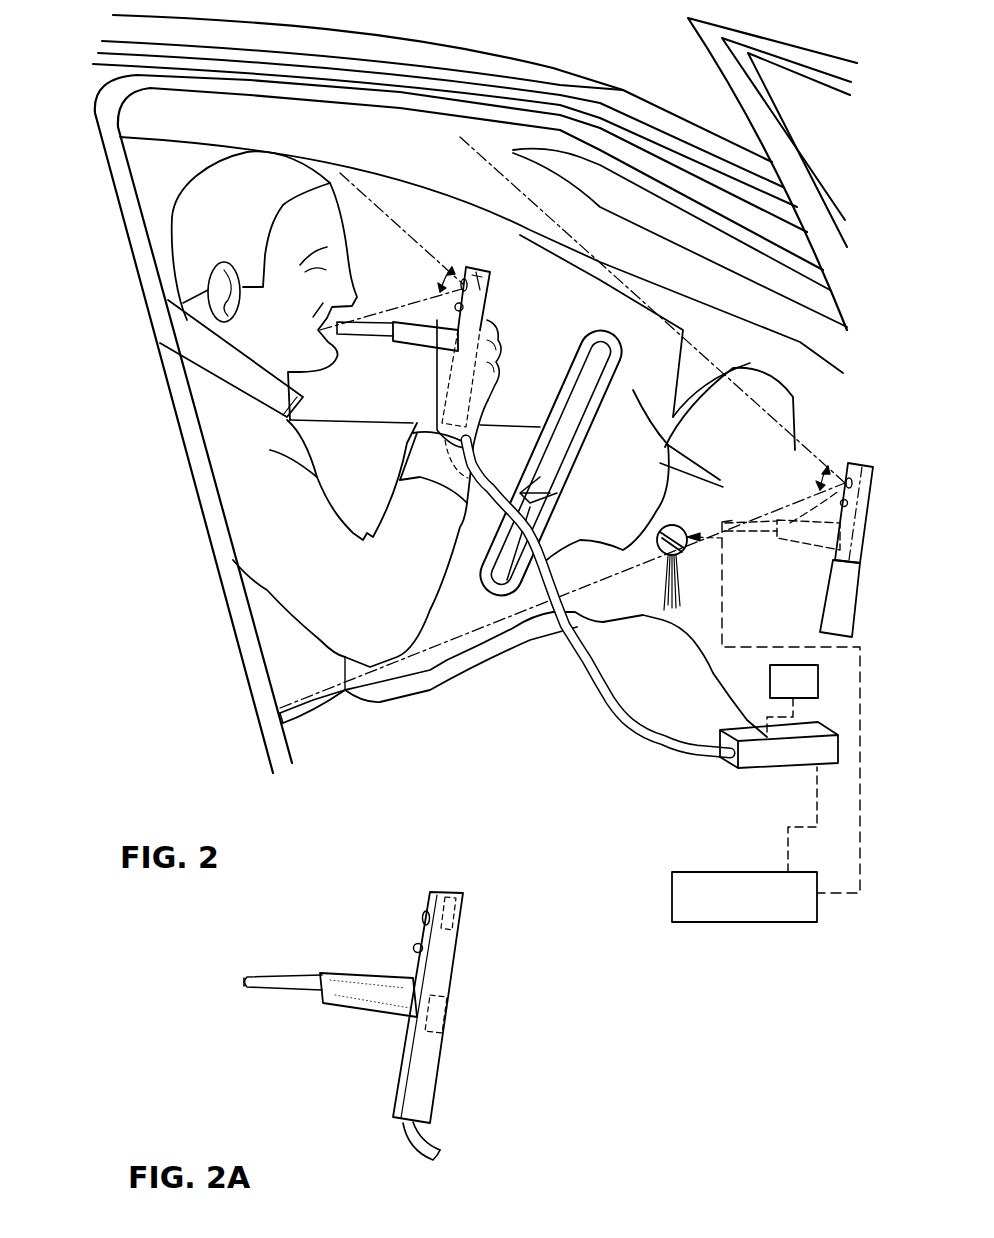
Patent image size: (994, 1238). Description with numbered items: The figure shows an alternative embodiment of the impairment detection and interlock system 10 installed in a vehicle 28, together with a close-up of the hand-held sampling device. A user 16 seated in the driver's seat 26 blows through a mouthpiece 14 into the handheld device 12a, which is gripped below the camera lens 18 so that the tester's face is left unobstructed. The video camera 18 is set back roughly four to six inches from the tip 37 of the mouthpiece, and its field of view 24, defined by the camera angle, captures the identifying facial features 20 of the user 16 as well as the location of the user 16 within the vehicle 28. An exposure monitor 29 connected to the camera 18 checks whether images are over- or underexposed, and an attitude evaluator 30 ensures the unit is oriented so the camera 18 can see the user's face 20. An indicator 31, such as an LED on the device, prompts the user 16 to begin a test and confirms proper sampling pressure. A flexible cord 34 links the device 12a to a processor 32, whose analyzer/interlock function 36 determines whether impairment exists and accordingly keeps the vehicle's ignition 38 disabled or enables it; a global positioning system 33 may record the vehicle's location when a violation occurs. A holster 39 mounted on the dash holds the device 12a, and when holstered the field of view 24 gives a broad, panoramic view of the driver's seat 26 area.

In FIG. 2, the impairment detection and interlock system 10 is at (350, 772).
In FIG. 2, the handheld device 12a is at (402, 347).
In FIG. 2A, the handheld device 12a is at (319, 1048).
In FIG. 2, the mouthpiece 14 is at (365, 320).
In FIG. 2A, the mouthpiece 14 is at (280, 975).
In FIG. 2, the user 16 is at (320, 462).
In FIG. 2, the video camera 18 is at (465, 280).
In FIG. 2A, the video camera 18 is at (425, 910).
In FIG. 2, the identifying facial features 20 is at (345, 262).
In FIG. 2, the field of view 24 is at (390, 212).
In FIG. 2, the driver's seat 26 is at (528, 746).
In FIG. 2, the vehicle 28 is at (553, 68).
In FIG. 2A, the exposure monitor 29 is at (453, 890).
In FIG. 2A, the attitude evaluator 30 is at (448, 1020).
In FIG. 2, the indicator 31 is at (465, 308).
In FIG. 2A, the indicator 31 is at (413, 947).
In FIG. 2, the processor 32 is at (786, 770).
In FIG. 2, the global positioning system 33 is at (770, 683).
In FIG. 2, the flexible cord 34 is at (622, 705).
In FIG. 2A, the flexible cord 34 is at (430, 1145).
In FIG. 2, the analyzer/interlock function 36 is at (700, 872).
In FIG. 2A, the tip of the mouthpiece 37 is at (240, 980).
In FIG. 2, the ignition 38 is at (680, 528).
In FIG. 2, the holster 39 is at (820, 628).